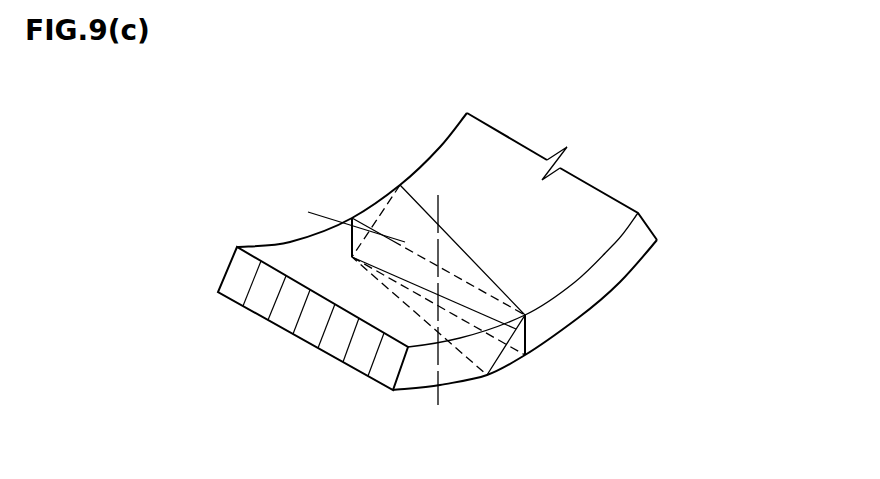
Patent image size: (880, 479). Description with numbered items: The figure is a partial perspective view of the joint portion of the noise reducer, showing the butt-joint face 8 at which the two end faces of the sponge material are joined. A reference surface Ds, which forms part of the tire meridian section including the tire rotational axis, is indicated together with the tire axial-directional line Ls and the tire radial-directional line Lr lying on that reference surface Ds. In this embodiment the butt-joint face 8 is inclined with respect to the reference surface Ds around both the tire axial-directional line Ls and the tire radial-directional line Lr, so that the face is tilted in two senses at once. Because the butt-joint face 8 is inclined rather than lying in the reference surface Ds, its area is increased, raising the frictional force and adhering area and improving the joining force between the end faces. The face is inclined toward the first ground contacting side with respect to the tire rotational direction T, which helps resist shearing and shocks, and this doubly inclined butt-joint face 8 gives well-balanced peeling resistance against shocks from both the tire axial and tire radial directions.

The butt-joint face 8 is at (480, 353).
The tire axial-directional line Ls is at (327, 222).
The reference surface Ds is at (373, 203).
The tire radial-directional line Lr is at (437, 287).
The tire rotational direction T is at (620, 362).